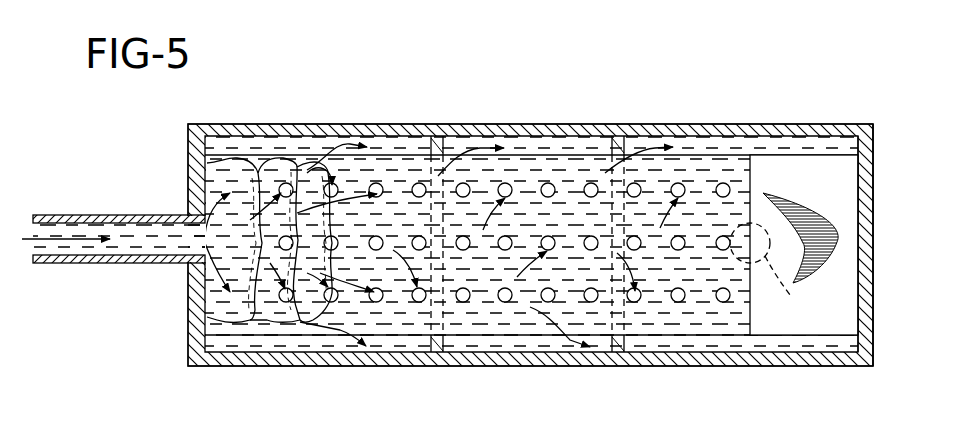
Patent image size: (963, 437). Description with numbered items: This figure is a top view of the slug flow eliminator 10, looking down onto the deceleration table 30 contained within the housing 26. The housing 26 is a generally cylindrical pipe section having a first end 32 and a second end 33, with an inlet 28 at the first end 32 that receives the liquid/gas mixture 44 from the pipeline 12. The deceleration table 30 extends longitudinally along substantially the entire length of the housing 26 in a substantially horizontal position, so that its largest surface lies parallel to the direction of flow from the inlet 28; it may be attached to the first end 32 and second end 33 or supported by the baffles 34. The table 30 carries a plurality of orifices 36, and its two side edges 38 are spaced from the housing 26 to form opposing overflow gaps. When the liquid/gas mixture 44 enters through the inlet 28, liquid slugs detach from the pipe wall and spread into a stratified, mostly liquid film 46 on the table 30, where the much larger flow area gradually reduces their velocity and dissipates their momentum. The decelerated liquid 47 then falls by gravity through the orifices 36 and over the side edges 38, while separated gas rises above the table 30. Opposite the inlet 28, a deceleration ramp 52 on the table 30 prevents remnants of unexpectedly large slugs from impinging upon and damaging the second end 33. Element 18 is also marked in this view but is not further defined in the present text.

The slug flow eliminator 10 is at (437, 105).
The pipeline 12 is at (119, 232).
The outlet 18 is at (787, 296).
The housing 26 is at (527, 133).
The inlet 28 is at (188, 212).
The deceleration table 30 is at (688, 173).
The first end 32 is at (186, 287).
The second end 33 is at (878, 308).
The baffles 34 is at (446, 155).
The orifices 36 is at (505, 302).
The side edges 38 is at (585, 155).
The liquid/gas mixture 44 is at (24, 251).
The liquid film 46 is at (240, 160).
The decelerated liquid 47 is at (338, 328).
The deceleration ramp 52 is at (780, 176).